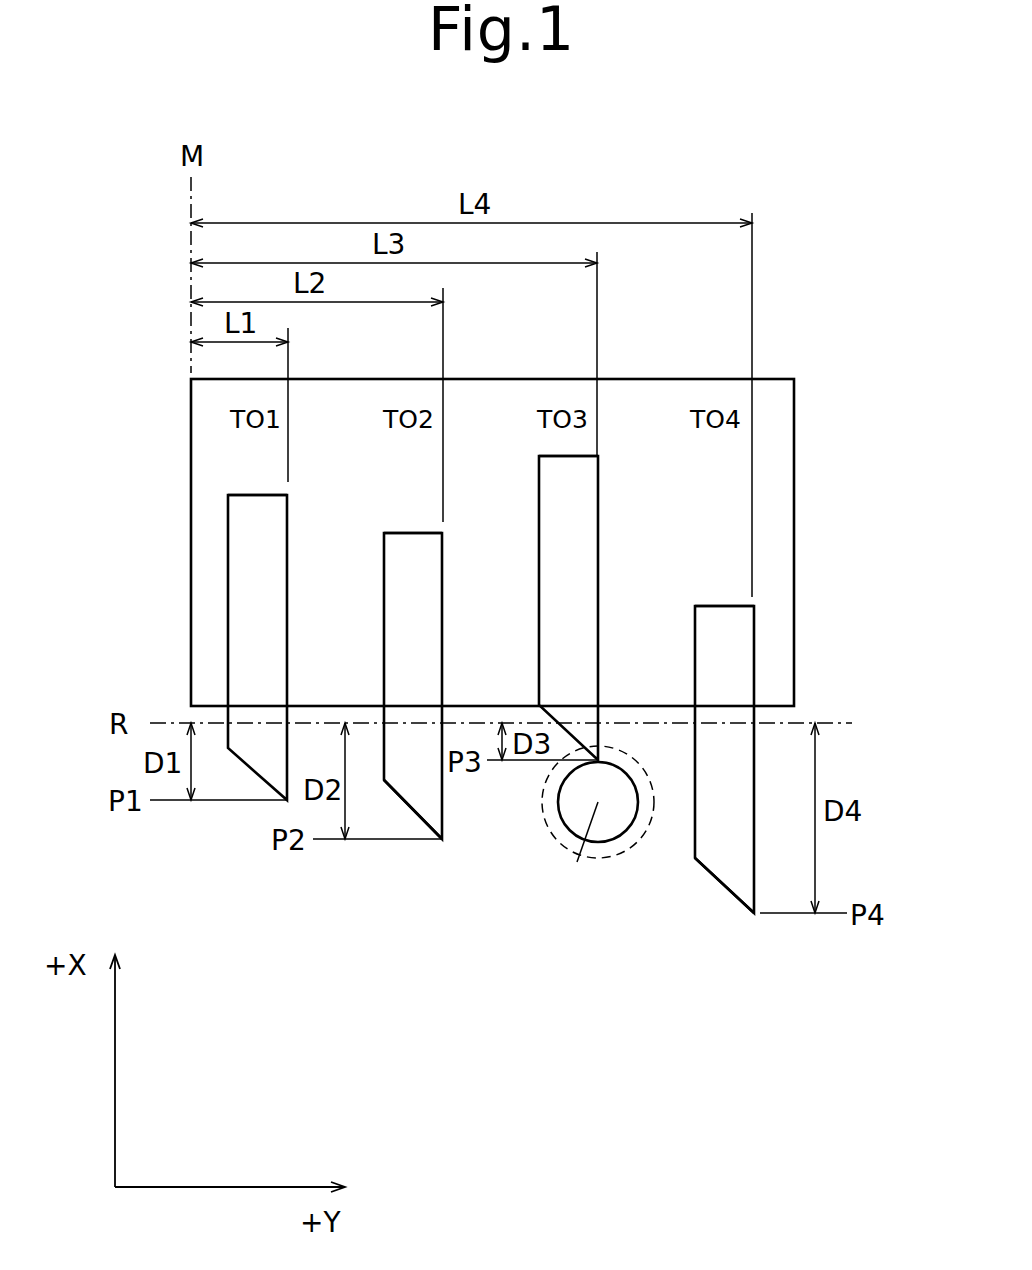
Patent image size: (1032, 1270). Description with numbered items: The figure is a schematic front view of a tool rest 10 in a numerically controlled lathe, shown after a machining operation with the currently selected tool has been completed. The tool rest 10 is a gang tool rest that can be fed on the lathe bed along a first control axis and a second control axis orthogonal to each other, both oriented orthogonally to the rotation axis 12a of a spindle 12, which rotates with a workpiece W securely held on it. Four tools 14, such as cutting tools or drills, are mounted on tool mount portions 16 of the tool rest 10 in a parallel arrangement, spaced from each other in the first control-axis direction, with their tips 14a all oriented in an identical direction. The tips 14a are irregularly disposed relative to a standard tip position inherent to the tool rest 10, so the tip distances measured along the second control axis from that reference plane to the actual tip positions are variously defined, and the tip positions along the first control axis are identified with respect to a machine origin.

The tool rest 10 is at (186, 444).
The spindle 12 is at (562, 846).
The rotation axis 12a is at (575, 868).
The tools 14 is at (245, 567).
The tips 14a is at (441, 842).
The tool mount portions 16 is at (253, 492).
The workpiece W is at (613, 840).